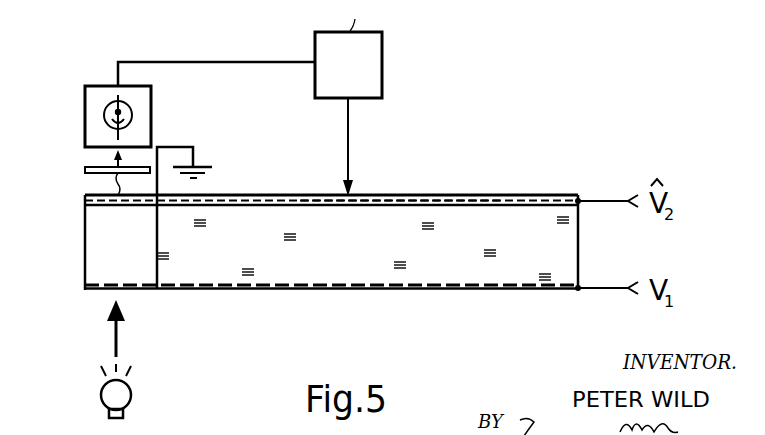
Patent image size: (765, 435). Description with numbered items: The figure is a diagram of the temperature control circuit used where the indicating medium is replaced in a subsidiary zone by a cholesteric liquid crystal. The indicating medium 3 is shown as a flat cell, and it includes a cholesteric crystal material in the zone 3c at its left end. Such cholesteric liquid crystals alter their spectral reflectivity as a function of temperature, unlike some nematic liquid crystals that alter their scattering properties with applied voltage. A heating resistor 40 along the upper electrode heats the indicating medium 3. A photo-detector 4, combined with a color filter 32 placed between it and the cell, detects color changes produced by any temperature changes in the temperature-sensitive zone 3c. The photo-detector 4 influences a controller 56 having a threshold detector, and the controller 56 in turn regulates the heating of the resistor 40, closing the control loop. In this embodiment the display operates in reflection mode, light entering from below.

The indicating medium 3 is at (355, 260).
The zone of cholesteric crystal material 3c is at (136, 258).
The heating resistor 40 is at (408, 200).
The controller 56 is at (383, 63).
The photo-detector 4 is at (84, 98).
The color filter 32 is at (85, 168).